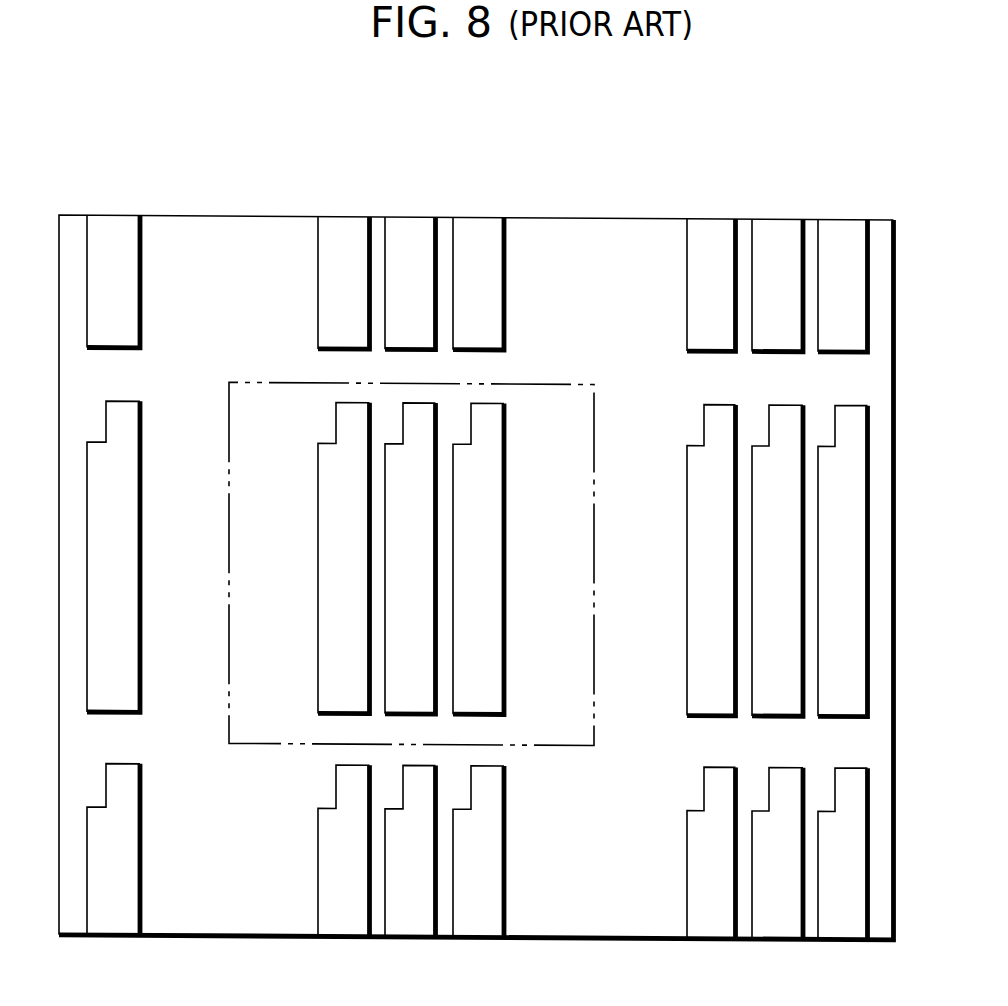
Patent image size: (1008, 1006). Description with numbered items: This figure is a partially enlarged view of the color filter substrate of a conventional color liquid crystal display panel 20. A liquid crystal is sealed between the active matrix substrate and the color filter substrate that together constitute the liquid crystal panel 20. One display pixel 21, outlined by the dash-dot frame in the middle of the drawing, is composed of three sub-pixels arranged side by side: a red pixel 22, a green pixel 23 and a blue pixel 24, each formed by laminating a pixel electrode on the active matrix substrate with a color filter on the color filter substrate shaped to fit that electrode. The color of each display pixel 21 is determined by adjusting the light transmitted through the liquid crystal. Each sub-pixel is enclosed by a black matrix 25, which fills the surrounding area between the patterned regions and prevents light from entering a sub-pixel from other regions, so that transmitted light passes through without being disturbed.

The color liquid crystal display panel 20 is at (670, 183).
The display pixel 21 is at (273, 381).
The red pixel 22 is at (341, 230).
The green pixel 23 is at (411, 230).
The blue pixel 24 is at (481, 230).
The black matrix 25 is at (591, 223).